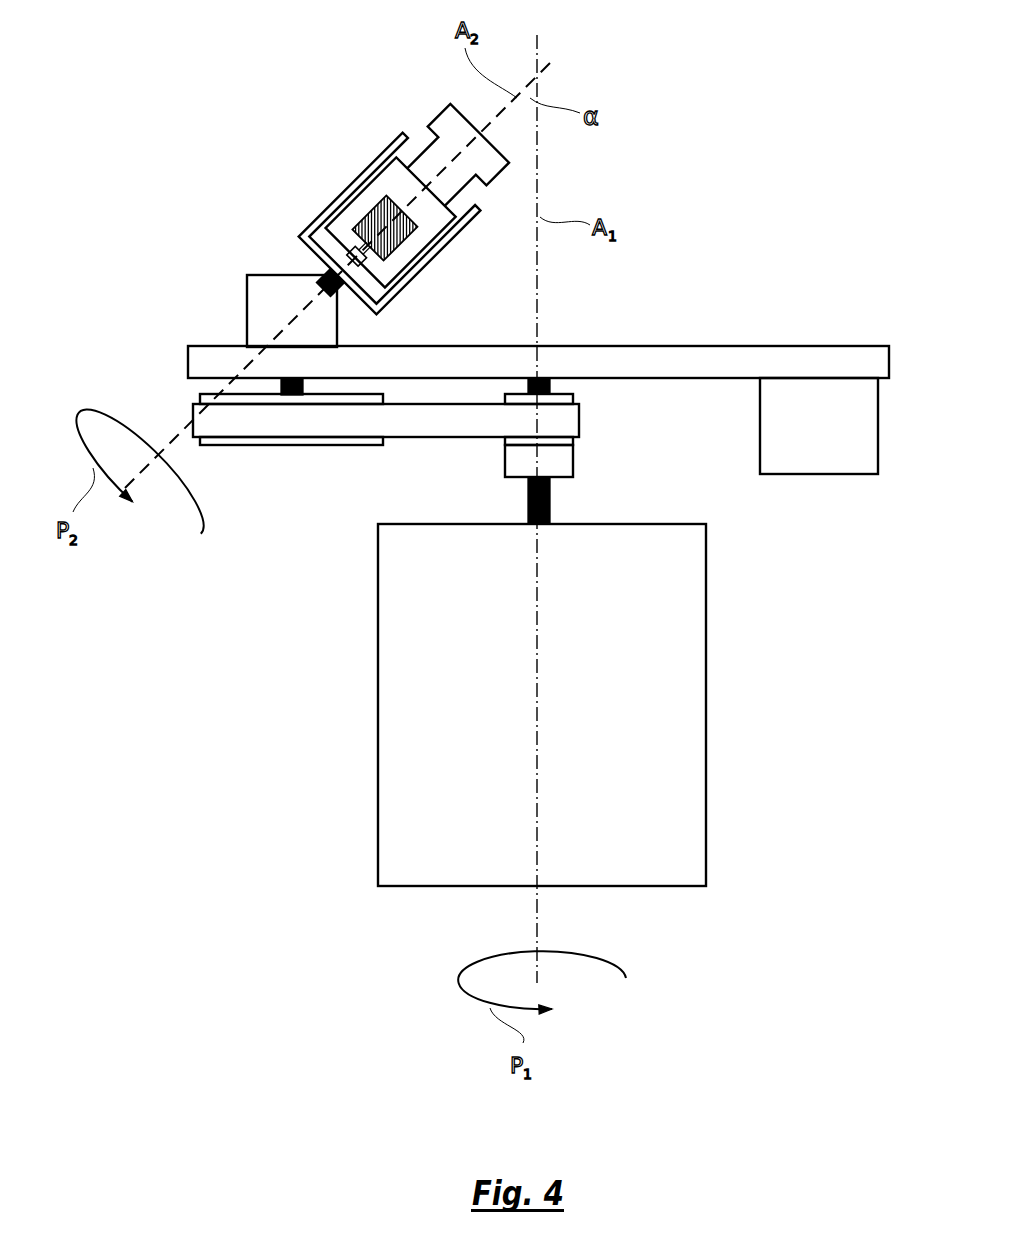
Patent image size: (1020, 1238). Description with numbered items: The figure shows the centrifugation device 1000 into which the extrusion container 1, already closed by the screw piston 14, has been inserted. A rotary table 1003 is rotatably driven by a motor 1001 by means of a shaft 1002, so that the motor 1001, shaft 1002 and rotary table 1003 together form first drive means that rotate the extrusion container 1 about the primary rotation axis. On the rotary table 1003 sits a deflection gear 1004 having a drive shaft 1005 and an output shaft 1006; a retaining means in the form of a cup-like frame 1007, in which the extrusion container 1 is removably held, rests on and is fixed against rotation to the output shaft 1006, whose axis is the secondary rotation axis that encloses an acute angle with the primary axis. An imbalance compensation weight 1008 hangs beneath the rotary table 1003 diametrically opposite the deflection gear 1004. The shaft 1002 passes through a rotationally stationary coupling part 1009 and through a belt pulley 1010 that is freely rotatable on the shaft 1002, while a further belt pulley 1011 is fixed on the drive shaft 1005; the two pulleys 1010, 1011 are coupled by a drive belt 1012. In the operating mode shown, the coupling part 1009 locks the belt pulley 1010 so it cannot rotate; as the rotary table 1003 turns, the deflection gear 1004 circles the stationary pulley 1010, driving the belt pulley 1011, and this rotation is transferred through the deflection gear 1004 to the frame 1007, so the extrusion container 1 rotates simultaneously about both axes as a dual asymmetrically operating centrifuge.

The extrusion container 1 is at (372, 170).
The screw piston 14 is at (443, 128).
The centrifugation device 1000 is at (738, 196).
The motor 1001 is at (683, 760).
The shaft 1002 is at (527, 502).
The rotary table 1003 is at (722, 357).
The deflection gear 1004 is at (251, 302).
The drive shaft 1005 is at (280, 385).
The output shaft 1006 is at (320, 270).
The cup-like frame 1007 is at (308, 234).
The imbalance compensation weight 1008 is at (827, 462).
The coupling part 1009 is at (573, 473).
The belt pulley 1010 is at (505, 438).
The belt pulley 1011 is at (270, 440).
The drive belt 1012 is at (423, 427).